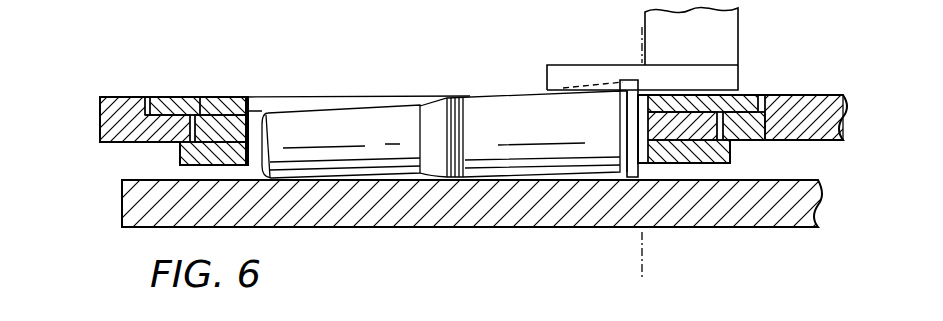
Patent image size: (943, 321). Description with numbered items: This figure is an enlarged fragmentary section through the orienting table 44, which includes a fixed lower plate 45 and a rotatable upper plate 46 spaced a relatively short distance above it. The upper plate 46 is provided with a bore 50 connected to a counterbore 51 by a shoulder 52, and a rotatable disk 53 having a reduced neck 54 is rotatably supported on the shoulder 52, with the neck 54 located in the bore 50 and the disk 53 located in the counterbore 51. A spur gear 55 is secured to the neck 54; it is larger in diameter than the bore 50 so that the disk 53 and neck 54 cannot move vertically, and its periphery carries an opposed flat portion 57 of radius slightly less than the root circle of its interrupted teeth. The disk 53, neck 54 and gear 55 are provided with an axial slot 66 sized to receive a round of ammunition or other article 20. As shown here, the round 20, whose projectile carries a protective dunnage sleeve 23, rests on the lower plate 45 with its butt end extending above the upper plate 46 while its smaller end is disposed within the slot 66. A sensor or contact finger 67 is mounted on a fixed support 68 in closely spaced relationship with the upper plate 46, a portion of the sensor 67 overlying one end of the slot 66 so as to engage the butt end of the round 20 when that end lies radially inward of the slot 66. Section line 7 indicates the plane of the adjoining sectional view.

The section line 7- 7 is at (648, 32).
The article 20 is at (470, 107).
The dunnage sleeve 23 is at (334, 118).
The orienting table 44 is at (123, 93).
The lower plate 45 is at (131, 200).
The upper plate 46 is at (100, 113).
The bore 50 is at (187, 130).
The counterbore 51 is at (147, 97).
The shoulder 52 is at (174, 115).
The rotatable disk 53 is at (218, 103).
The neck 54 is at (230, 115).
The spur gear 55 is at (186, 165).
The peripheral flat portion 57 is at (732, 152).
The axial slot 66 is at (264, 99).
The sensor 67 is at (565, 70).
The fixed support 68 is at (728, 35).